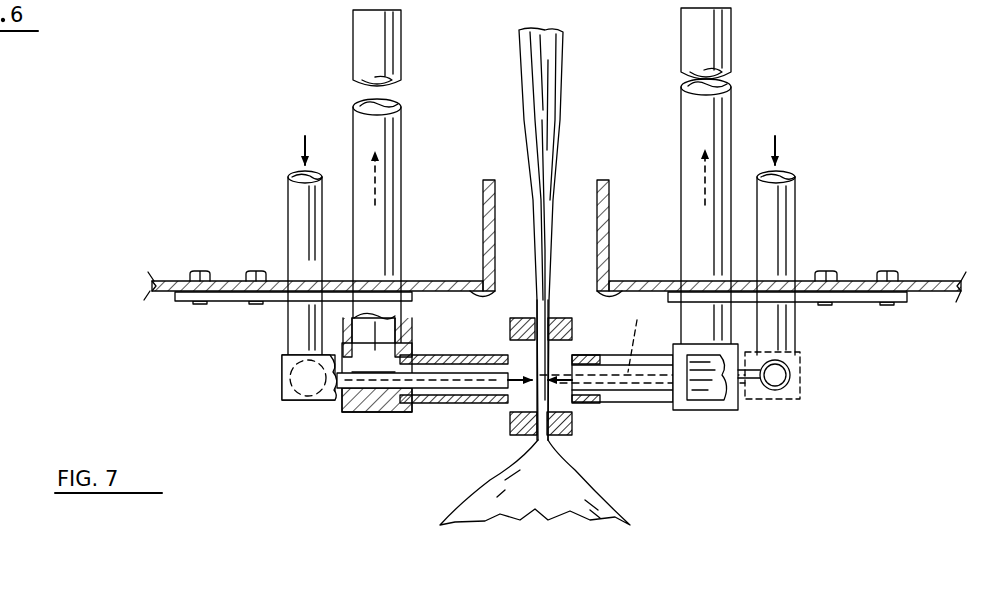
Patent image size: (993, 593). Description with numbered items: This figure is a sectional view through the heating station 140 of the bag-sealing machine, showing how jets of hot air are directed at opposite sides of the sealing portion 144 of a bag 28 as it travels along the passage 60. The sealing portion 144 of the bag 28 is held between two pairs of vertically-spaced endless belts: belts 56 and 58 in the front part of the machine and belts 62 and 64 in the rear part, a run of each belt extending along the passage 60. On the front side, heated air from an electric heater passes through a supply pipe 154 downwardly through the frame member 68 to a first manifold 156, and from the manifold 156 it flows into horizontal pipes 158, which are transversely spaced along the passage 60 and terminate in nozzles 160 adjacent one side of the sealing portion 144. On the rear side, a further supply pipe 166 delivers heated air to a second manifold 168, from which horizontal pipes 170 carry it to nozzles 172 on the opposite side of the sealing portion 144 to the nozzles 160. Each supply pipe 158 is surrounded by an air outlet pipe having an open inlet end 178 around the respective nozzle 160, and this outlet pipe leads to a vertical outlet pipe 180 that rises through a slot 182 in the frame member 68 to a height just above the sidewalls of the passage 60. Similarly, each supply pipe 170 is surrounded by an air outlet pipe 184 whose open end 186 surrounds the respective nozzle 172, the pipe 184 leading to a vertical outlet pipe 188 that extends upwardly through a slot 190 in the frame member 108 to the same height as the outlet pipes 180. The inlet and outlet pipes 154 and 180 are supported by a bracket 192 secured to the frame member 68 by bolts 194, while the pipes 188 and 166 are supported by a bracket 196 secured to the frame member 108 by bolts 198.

The bag 28 is at (603, 511).
The endless belt 56 is at (514, 318).
The endless belt 58 is at (520, 436).
The passage 60 is at (516, 190).
The endless belt 62 is at (568, 318).
The endless belt 64 is at (562, 436).
The frame member 68 is at (228, 282).
The frame member 108 is at (925, 280).
The heating station 140 is at (266, 195).
The sealing portion 144 is at (536, 318).
The supply pipe 154 is at (290, 178).
The first manifold 156 is at (282, 376).
The horizontal pipe 158 is at (382, 400).
The nozzle 160 is at (509, 368).
The supply pipe 166 is at (790, 205).
The second manifold 168 is at (774, 382).
The horizontal pipe 170 is at (642, 334).
The nozzle 172 is at (576, 368).
The open inlet end 178 is at (508, 400).
The vertical outlet pipe 180 is at (352, 110).
The slot 182 is at (418, 280).
The air outlet pipe 184 is at (652, 402).
The open end 186 is at (574, 400).
The vertical outlet pipe 188 is at (683, 163).
The slot 190 is at (682, 291).
The bracket 192 is at (216, 302).
The bolts 194 is at (190, 275).
The bracket 196 is at (862, 302).
The bolts 198 is at (880, 275).